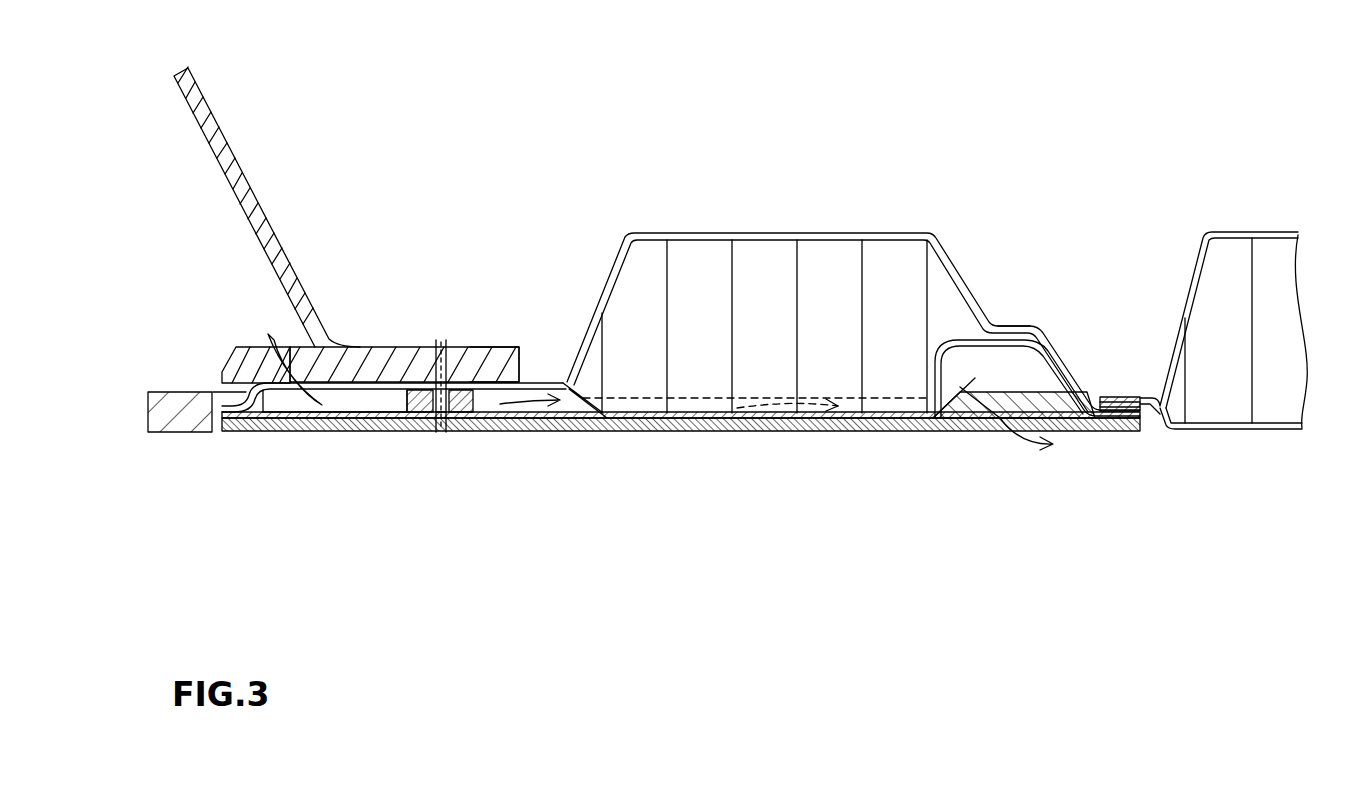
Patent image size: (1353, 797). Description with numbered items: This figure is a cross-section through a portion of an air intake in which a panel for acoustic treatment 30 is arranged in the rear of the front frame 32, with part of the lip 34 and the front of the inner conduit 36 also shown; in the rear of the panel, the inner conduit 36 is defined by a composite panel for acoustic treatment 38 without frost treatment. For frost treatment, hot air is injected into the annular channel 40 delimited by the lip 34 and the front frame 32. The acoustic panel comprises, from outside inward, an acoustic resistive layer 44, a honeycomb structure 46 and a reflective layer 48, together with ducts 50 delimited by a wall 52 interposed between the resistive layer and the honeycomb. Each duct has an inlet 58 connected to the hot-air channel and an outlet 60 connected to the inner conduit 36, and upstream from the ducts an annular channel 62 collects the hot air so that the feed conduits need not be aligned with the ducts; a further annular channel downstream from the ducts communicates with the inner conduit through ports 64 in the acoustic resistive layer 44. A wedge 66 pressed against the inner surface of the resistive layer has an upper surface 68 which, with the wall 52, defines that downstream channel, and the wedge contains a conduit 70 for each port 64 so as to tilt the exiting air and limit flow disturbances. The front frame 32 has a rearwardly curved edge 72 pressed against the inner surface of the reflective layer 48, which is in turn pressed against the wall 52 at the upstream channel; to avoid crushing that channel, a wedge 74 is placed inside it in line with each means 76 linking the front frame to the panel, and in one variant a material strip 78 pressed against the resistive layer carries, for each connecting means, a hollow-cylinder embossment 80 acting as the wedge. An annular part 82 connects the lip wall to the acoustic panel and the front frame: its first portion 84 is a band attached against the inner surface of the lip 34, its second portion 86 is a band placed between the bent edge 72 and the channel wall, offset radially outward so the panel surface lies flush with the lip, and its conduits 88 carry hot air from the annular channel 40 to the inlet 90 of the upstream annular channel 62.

The panel for acoustic treatment 30 is at (800, 369).
The front frame 32 is at (292, 272).
The lip 34 is at (186, 433).
The inner conduit 36 is at (817, 578).
The panel for acoustic treatment without frost treatment 38 is at (1270, 262).
The annular channel 40 is at (155, 120).
The acoustic resistive layer 44 is at (722, 431).
The honeycomb structure 46 is at (862, 250).
The reflective layer 48 is at (793, 233).
The ducts 50 is at (657, 431).
The wall 52 is at (608, 431).
The inlet 58 is at (556, 431).
The outlet 60 is at (945, 340).
The annular channel 62 is at (493, 432).
The ports 64 is at (1010, 431).
The wedge 66 is at (1063, 395).
The upper surface 68 is at (1030, 333).
The conduit 70 is at (990, 431).
The rearwardly curved edge 72 is at (422, 347).
The wedge 74 is at (490, 347).
The means providing a link 76 is at (440, 432).
The material strip 78 is at (370, 432).
The embossment 80 is at (413, 432).
The annular part 82 is at (221, 366).
The first portion 84 is at (213, 392).
The second portion 86 is at (387, 347).
The conduits 88 is at (273, 337).
The inlet 90 is at (303, 432).